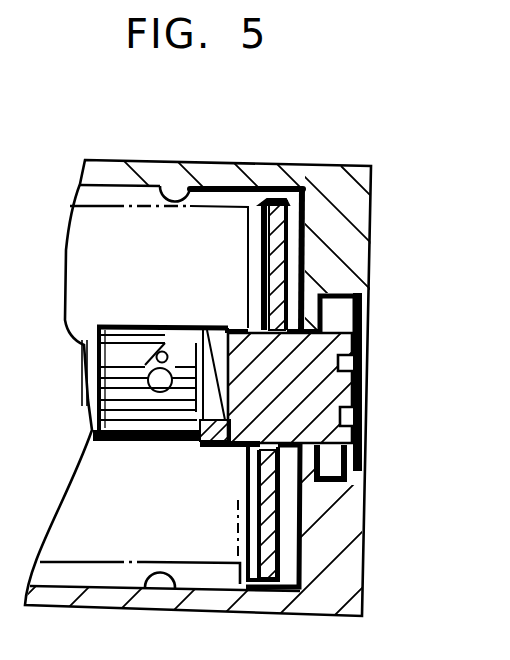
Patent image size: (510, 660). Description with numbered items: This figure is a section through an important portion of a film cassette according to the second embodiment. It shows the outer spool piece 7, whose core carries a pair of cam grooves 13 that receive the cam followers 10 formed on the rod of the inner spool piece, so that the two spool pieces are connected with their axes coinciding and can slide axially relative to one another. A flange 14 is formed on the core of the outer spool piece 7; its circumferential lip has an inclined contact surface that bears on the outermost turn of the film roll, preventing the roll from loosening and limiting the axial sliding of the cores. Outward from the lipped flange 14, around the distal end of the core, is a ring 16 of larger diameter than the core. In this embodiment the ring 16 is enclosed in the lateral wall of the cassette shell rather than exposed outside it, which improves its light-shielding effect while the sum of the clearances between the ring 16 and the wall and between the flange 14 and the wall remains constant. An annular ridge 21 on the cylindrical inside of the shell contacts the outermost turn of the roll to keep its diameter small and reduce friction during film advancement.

The outer spool piece 7 is at (188, 460).
The cam followers 10 is at (157, 393).
The cam grooves 13 is at (183, 343).
The flange 14 is at (277, 199).
The ring 16 is at (353, 313).
The annular ridge 21 is at (174, 184).